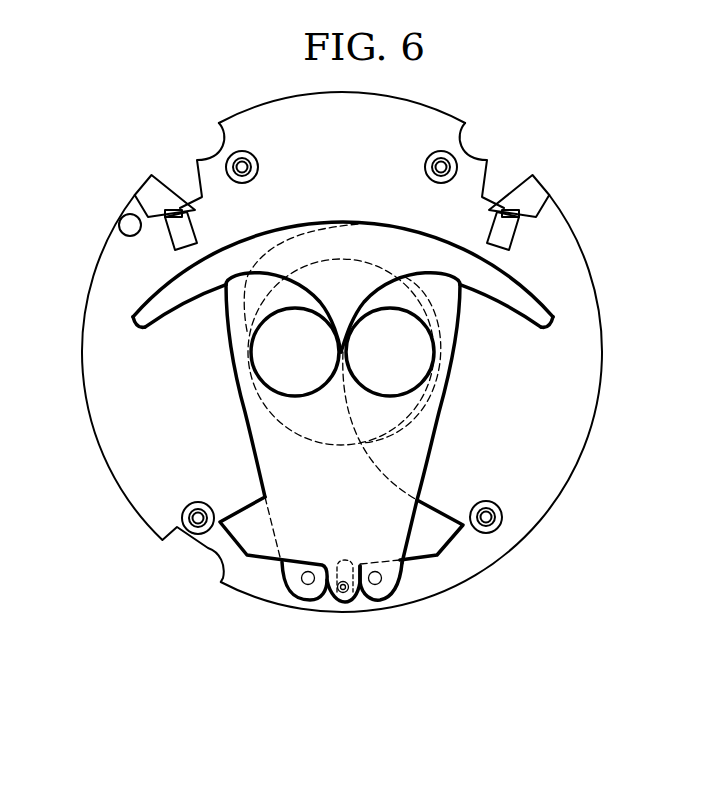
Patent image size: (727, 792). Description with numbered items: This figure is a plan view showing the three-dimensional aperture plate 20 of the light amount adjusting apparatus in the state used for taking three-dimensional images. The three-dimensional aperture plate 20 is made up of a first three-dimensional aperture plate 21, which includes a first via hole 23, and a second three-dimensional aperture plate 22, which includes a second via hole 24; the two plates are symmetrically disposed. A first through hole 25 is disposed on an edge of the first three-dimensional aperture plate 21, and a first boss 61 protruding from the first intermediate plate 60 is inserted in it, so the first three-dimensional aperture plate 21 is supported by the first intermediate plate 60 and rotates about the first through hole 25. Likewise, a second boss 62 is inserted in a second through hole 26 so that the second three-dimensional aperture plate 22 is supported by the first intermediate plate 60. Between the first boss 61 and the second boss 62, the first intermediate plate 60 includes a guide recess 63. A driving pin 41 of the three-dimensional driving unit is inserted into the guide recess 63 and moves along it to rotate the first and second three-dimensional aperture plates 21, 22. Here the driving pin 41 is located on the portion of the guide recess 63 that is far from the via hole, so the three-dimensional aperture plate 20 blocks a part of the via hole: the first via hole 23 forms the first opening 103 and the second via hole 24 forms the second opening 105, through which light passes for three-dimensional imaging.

The 3D aperture plate 20 is at (342, 445).
The first 3D aperture plate 21 is at (258, 418).
The second 3D aperture plate 22 is at (417, 447).
The first via hole 23 is at (285, 361).
The second via hole 24 is at (412, 325).
The first through hole 25 is at (300, 580).
The second through hole 26 is at (380, 580).
The driving pin 41 is at (343, 593).
The first intermediate plate 60 is at (585, 369).
The first boss 61 is at (308, 580).
The second boss 62 is at (375, 580).
The guide recess 63 is at (344, 541).
The first opening 103 is at (255, 333).
The second opening 105 is at (395, 358).